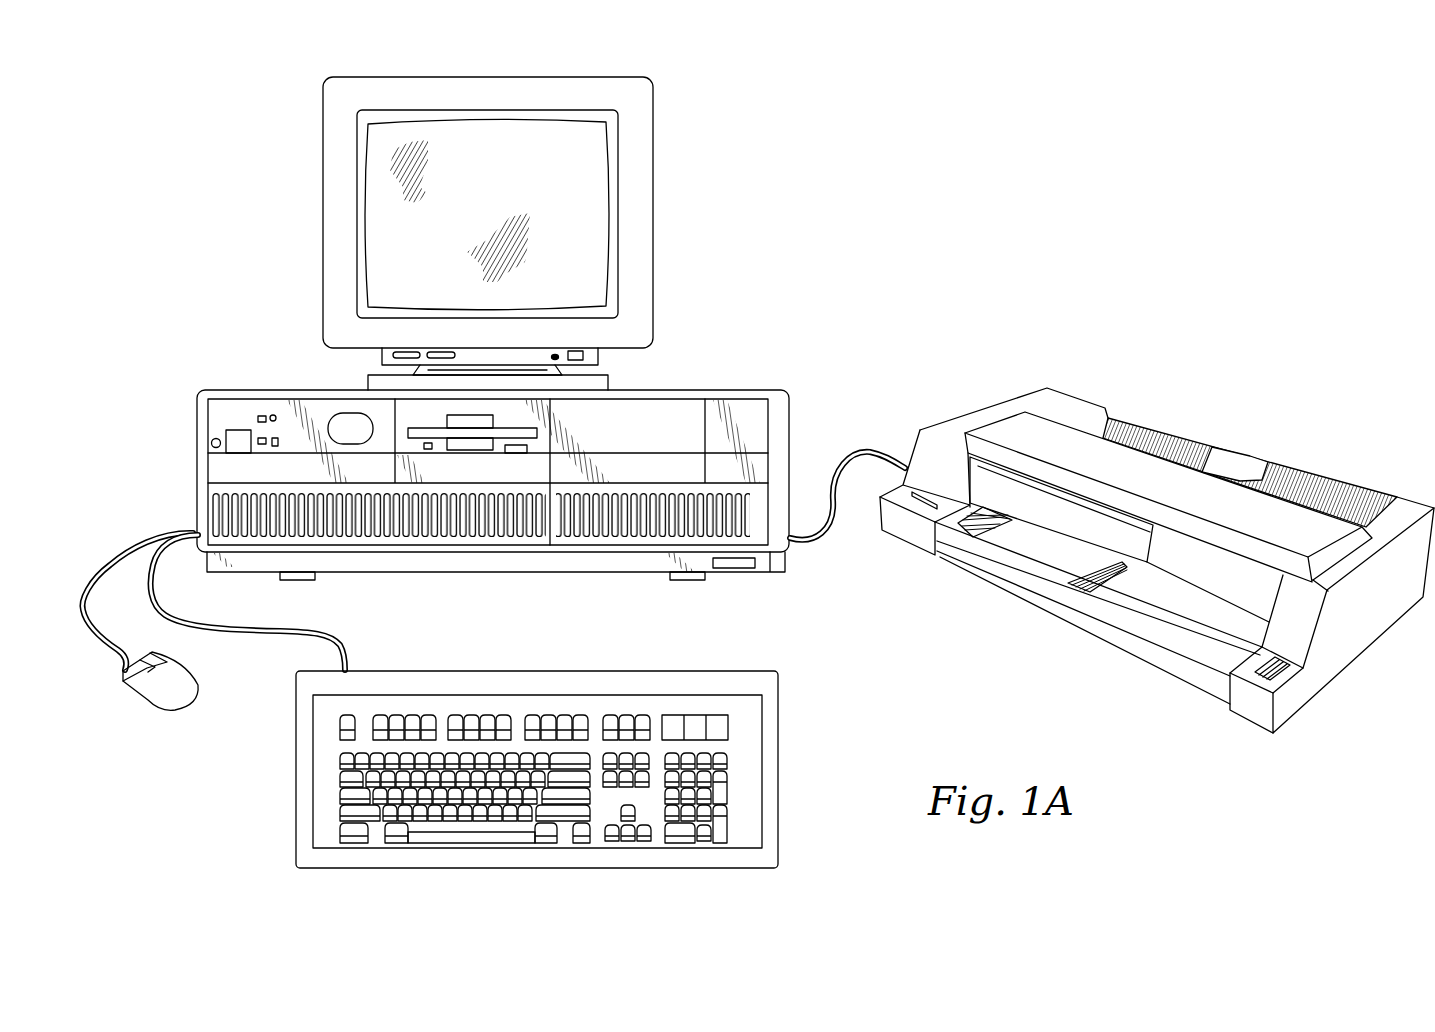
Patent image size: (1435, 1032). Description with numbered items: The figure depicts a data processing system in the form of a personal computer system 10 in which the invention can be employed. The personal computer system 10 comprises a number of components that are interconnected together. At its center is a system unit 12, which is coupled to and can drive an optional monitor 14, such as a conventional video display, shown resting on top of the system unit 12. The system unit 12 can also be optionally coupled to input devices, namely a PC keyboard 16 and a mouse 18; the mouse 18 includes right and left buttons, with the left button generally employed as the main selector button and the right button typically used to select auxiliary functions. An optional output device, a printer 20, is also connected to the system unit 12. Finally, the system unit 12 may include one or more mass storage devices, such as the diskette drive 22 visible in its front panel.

The personal computer system 10 is at (871, 200).
The system unit 12 is at (551, 464).
The monitor 14 is at (663, 244).
The PC keyboard 16 is at (652, 665).
The mouse 18 is at (142, 688).
The printer 20 is at (982, 396).
The diskette drive 22 is at (478, 442).